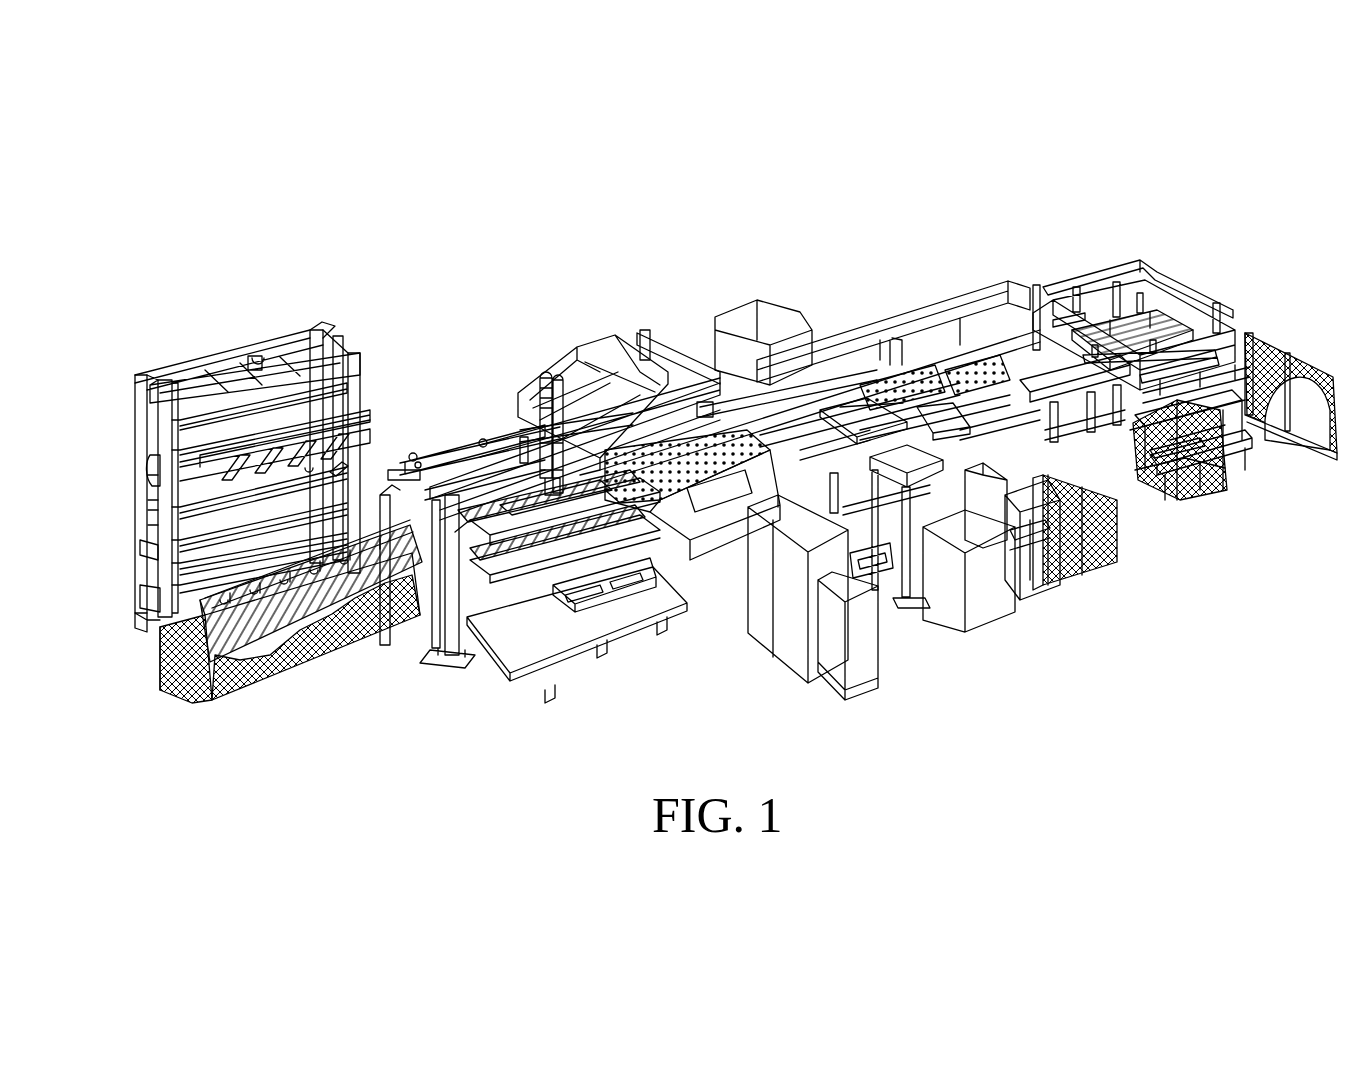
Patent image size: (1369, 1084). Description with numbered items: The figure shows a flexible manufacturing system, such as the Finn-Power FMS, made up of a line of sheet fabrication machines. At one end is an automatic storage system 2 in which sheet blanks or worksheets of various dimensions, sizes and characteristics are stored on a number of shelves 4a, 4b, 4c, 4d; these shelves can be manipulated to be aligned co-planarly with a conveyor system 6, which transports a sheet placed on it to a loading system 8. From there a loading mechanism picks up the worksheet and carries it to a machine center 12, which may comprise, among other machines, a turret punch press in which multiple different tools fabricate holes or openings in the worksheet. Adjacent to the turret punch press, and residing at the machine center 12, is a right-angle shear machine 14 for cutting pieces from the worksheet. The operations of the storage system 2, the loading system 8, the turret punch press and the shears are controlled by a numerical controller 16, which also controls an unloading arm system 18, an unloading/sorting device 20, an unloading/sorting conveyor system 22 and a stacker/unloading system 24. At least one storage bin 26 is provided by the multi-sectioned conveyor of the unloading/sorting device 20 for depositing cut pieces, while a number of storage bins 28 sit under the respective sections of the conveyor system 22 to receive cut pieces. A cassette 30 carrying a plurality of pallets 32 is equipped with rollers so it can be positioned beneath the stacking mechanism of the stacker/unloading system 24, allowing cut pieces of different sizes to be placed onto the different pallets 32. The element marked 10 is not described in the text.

The automatic storage system 2 is at (222, 353).
The shelf 4a is at (143, 488).
The shelf 4b is at (148, 508).
The shelf 4c is at (150, 523).
The shelf 4d is at (173, 578).
The conveyor system 6 is at (305, 647).
The loading system 8 is at (455, 432).
The handling robot 10 is at (505, 480).
The machine center 12 is at (657, 472).
The right-angle shear machine 14 is at (935, 525).
The numerical controller 16 is at (858, 665).
The unloading arm system 18 is at (975, 312).
The unloading/sorting device 20 is at (1060, 587).
The unloading/sorting conveyor system 22 is at (1153, 445).
The stacker/unloading system 24 is at (1220, 350).
The storage bin 26 is at (1100, 573).
The storage bins 28 is at (1110, 437).
The cassette 30 is at (1247, 440).
The pallets 32 is at (1267, 430).